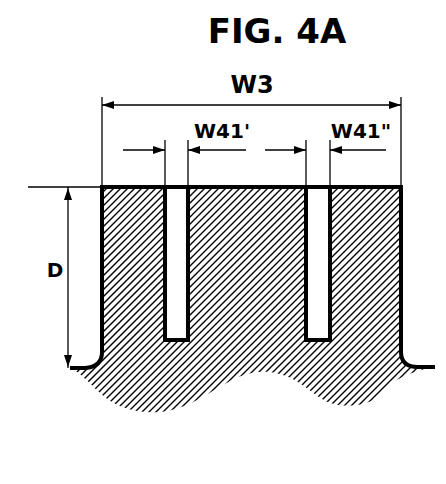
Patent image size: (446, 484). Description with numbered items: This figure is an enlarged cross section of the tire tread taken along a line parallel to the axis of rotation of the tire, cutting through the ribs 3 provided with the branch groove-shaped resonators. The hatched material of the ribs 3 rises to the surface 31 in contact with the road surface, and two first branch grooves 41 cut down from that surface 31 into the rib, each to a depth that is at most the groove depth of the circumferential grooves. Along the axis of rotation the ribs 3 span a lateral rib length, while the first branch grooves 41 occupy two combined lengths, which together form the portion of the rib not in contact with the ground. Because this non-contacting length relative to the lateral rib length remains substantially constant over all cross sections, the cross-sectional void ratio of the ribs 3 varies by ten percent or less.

The rib 3 is at (125, 245).
The surface in contact with the road surface 31 is at (121, 176).
The first branch groove 41 is at (321, 344).